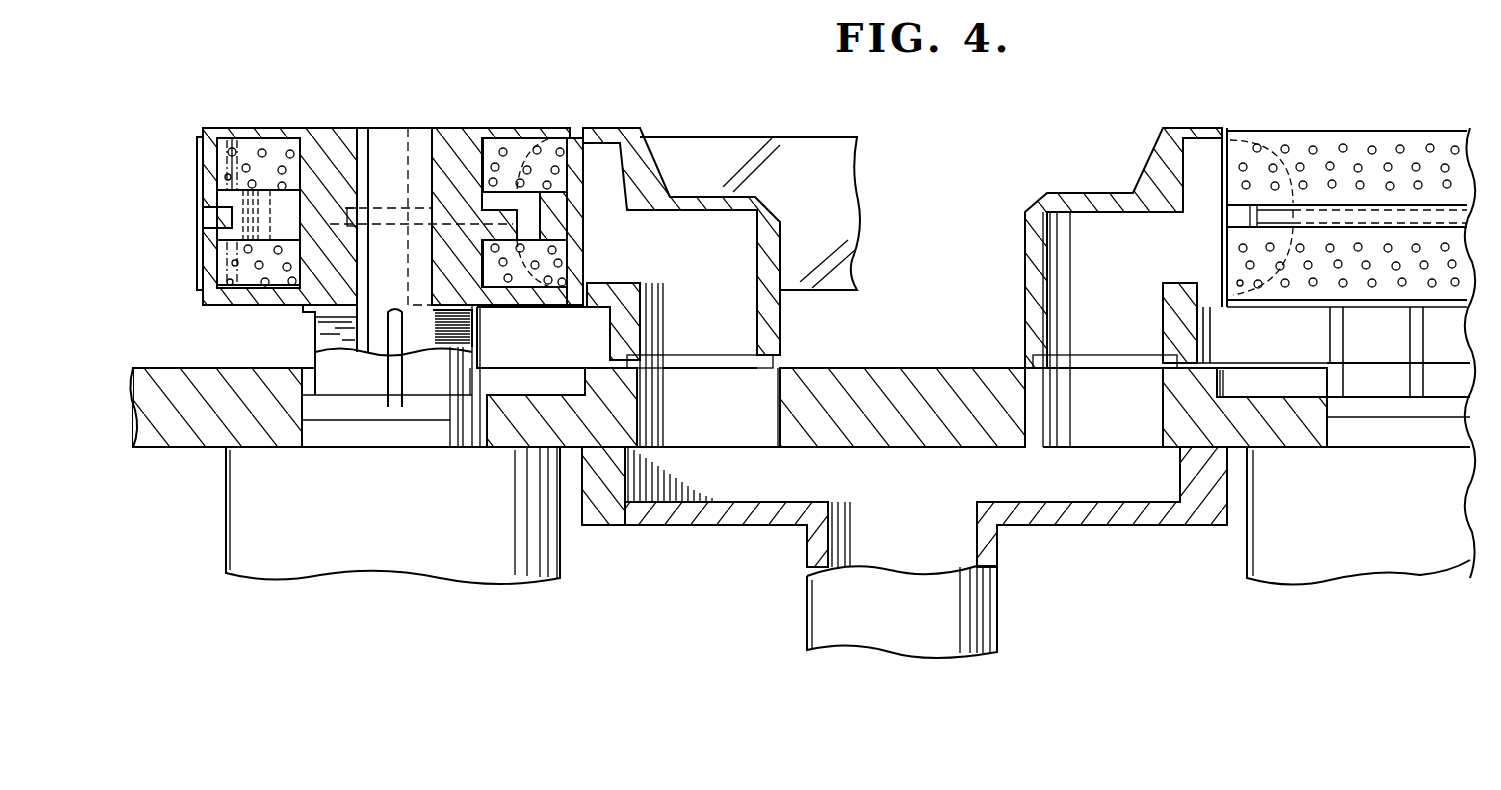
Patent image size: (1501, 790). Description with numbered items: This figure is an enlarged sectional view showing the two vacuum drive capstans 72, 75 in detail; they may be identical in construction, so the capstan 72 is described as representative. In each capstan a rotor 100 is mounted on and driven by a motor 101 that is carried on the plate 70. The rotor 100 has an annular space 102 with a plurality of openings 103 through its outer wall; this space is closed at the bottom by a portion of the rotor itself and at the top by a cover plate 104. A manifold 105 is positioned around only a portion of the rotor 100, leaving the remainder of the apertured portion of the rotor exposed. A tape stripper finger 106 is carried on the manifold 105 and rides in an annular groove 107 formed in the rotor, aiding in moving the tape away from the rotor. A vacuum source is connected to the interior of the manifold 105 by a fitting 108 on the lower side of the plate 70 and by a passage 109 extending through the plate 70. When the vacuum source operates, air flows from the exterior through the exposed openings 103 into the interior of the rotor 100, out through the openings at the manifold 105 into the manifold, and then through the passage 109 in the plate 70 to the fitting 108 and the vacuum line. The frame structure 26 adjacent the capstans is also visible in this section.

The frame member 26 is at (197, 262).
The plate 70 is at (907, 365).
The vacuum drive capstan 72 is at (340, 110).
The vacuum drive capstan 75 is at (1388, 124).
The rotor 100 is at (450, 140).
The motor 101 is at (848, 516).
The annular space 102 is at (228, 150).
The openings 103 is at (215, 157).
The cover plate 104 is at (530, 130).
The manifold 105 is at (645, 157).
The tape stripper finger 106 is at (373, 205).
The annular groove 107 is at (205, 217).
The fitting 108 is at (827, 630).
The passage 109 is at (765, 394).